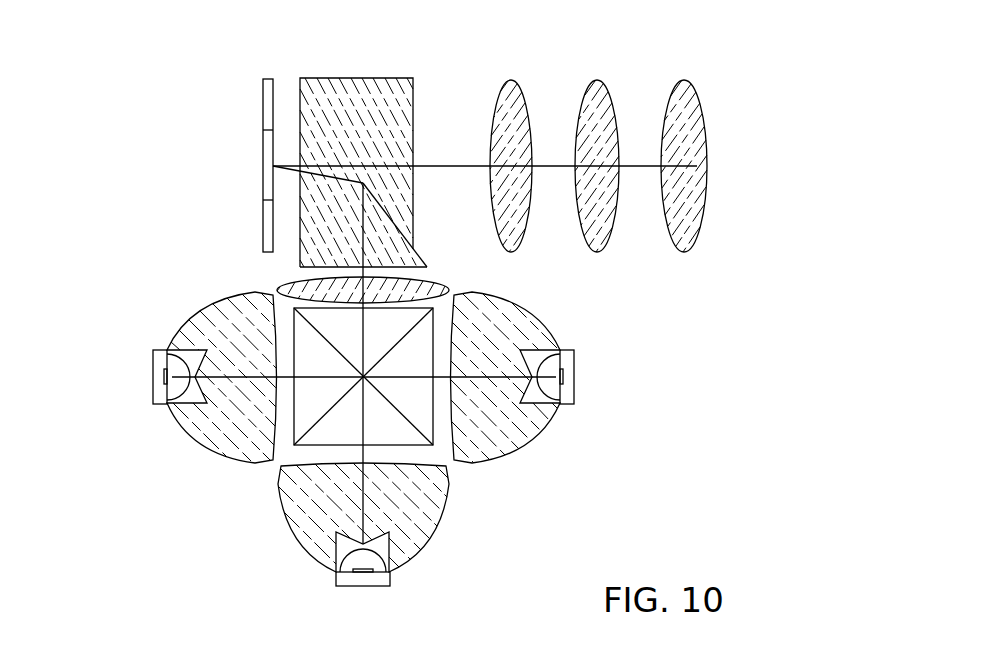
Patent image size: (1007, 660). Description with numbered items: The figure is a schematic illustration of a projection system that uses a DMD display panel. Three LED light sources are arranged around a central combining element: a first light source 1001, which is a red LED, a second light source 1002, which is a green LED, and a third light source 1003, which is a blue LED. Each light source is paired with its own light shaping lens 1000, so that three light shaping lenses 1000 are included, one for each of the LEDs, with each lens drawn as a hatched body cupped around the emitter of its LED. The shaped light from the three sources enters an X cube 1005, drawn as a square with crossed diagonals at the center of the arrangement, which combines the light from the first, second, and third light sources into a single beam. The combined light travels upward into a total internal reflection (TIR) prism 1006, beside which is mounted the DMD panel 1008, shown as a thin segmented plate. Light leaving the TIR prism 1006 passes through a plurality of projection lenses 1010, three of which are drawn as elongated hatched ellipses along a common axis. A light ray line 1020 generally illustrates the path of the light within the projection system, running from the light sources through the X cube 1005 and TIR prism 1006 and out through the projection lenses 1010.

The light shaping lens 1000 is at (222, 447).
The first light source 1001 is at (153, 393).
The second light source 1002 is at (370, 584).
The third light source 1003 is at (574, 376).
The X cube 1005 is at (433, 445).
The total internal reflection (TIR) prism 1006 is at (340, 78).
The DMD panel 1008 is at (263, 110).
The projection lens 1010 is at (503, 80).
The light ray line 1020 is at (646, 167).